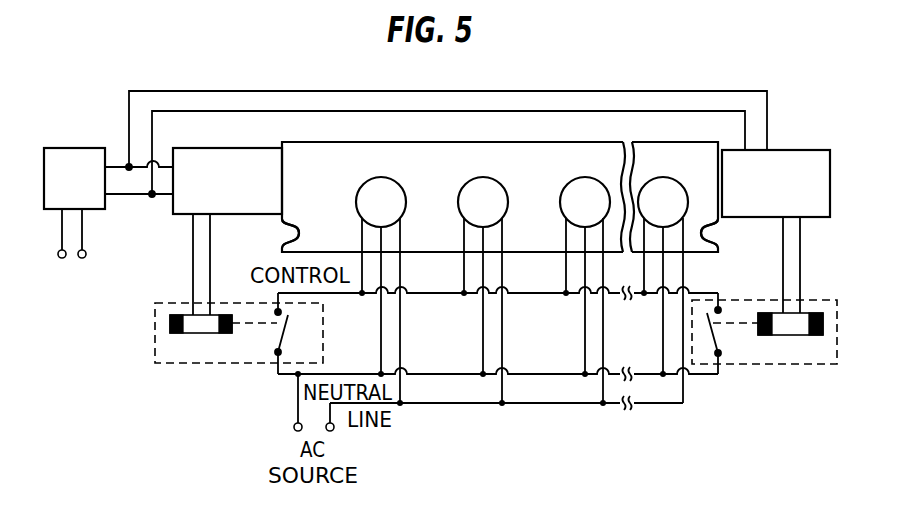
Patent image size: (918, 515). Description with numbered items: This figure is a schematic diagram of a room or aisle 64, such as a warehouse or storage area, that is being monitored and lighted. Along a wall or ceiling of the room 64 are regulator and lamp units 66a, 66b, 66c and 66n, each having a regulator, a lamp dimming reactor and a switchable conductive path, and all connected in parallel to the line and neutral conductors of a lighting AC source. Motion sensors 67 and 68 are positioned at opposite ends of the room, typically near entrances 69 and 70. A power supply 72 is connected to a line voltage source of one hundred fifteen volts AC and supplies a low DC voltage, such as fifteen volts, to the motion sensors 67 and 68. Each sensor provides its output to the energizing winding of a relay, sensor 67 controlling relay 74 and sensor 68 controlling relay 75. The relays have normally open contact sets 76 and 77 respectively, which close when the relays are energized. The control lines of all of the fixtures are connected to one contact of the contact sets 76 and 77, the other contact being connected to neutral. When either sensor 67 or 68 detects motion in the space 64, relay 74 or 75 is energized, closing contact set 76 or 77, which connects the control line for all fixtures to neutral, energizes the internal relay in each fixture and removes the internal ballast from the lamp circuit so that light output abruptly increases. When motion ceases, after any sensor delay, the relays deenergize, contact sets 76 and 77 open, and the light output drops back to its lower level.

The room or aisle 64 is at (426, 142).
The regulator and lamp unit 66a is at (375, 177).
The regulator and lamp unit 66b is at (477, 177).
The regulator and lamp unit 66c is at (563, 177).
The regulator and lamp unit 66n is at (655, 177).
The motion sensor 67 is at (250, 148).
The motion sensor 68 is at (792, 150).
The entrance 69 is at (276, 229).
The entrance 70 is at (724, 229).
The power supply 72 is at (70, 148).
The relay 74 is at (200, 335).
The relay 75 is at (789, 336).
The contact set 76 is at (266, 336).
The contact set 77 is at (731, 337).